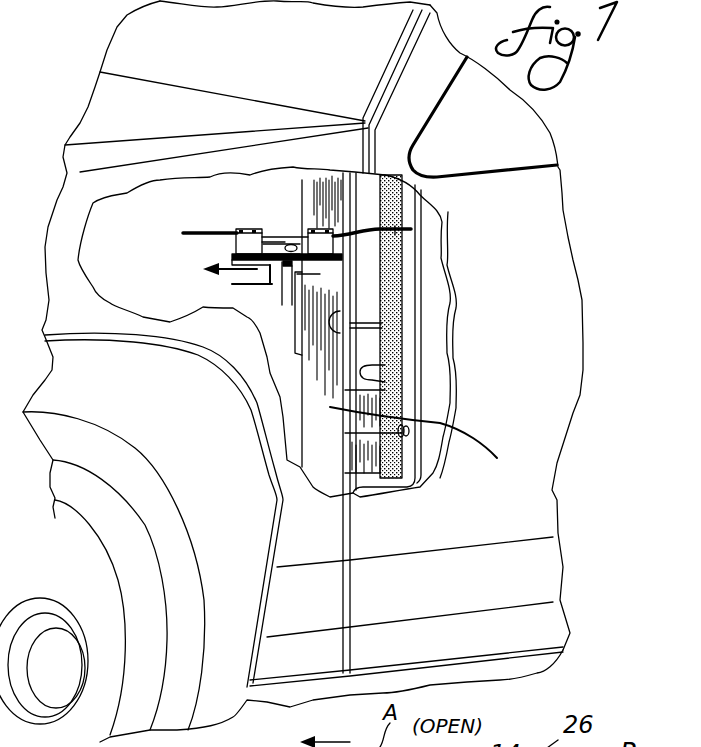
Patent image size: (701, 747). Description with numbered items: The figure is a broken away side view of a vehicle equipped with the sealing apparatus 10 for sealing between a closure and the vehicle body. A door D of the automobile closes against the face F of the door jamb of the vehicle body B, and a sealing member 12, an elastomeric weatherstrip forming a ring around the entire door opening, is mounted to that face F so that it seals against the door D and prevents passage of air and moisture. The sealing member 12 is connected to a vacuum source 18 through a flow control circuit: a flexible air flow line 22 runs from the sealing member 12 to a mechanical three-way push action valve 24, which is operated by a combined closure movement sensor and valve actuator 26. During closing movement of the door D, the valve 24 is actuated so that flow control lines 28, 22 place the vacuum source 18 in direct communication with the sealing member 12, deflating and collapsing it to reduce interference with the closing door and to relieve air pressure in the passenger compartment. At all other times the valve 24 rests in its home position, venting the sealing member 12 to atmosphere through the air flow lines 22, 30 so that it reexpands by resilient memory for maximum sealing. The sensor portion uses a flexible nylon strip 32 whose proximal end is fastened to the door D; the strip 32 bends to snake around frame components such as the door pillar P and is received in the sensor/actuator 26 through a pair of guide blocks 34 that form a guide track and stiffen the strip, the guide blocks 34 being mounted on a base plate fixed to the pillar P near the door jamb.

The sealing apparatus 10 is at (316, 84).
The sealing member 12 is at (418, 358).
The vacuum source 18 is at (177, 270).
The flexible air flow line 22 is at (350, 322).
The three-way push action valve 24 is at (340, 277).
The closure movement sensor/actuator 26 is at (276, 208).
The flow control line 28 is at (250, 285).
The air flow line 30 is at (292, 340).
The flexible nylon strip 32 is at (383, 231).
The guide blocks 34 is at (240, 231).
The vehicle body B is at (238, 137).
The door D is at (527, 350).
The door jamb face F is at (380, 198).
The door pillar P is at (421, 448).